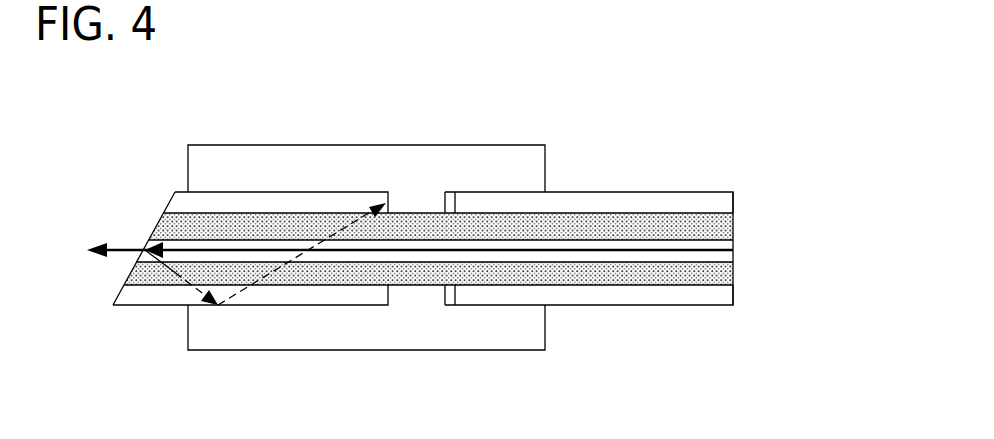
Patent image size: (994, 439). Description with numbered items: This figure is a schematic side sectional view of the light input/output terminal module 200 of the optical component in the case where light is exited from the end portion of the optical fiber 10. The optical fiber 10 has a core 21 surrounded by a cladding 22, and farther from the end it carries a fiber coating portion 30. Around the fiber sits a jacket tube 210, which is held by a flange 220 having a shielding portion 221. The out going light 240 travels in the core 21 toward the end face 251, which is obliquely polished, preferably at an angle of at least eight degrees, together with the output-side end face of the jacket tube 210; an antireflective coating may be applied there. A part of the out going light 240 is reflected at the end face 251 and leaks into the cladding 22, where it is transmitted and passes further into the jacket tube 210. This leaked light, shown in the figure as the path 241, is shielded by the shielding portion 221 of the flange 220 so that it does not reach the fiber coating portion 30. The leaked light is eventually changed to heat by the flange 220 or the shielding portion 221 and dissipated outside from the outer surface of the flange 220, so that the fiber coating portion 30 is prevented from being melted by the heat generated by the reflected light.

The light input/output terminal module 200 is at (366, 235).
The jacket tube 210 is at (262, 192).
The flange 220 is at (482, 160).
The shielding portion 221 is at (412, 300).
The optical fiber 10 is at (434, 260).
The core 21 is at (567, 255).
The cladding 22 is at (632, 275).
The fiber coating portion 30 is at (708, 297).
The out going light 240 is at (122, 248).
The stray light 241 is at (165, 268).
The end face 251 is at (145, 247).